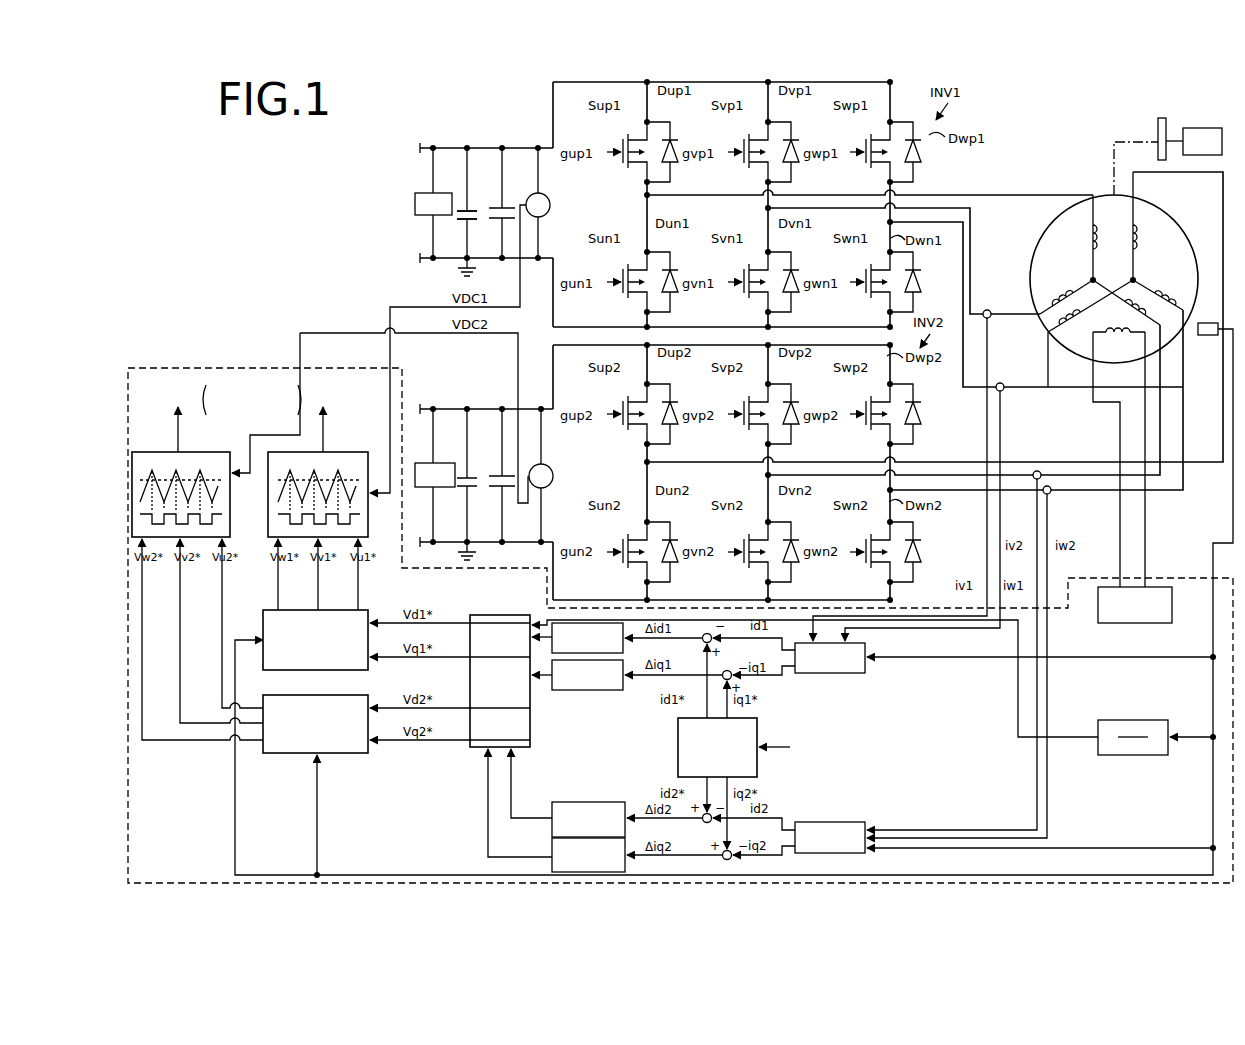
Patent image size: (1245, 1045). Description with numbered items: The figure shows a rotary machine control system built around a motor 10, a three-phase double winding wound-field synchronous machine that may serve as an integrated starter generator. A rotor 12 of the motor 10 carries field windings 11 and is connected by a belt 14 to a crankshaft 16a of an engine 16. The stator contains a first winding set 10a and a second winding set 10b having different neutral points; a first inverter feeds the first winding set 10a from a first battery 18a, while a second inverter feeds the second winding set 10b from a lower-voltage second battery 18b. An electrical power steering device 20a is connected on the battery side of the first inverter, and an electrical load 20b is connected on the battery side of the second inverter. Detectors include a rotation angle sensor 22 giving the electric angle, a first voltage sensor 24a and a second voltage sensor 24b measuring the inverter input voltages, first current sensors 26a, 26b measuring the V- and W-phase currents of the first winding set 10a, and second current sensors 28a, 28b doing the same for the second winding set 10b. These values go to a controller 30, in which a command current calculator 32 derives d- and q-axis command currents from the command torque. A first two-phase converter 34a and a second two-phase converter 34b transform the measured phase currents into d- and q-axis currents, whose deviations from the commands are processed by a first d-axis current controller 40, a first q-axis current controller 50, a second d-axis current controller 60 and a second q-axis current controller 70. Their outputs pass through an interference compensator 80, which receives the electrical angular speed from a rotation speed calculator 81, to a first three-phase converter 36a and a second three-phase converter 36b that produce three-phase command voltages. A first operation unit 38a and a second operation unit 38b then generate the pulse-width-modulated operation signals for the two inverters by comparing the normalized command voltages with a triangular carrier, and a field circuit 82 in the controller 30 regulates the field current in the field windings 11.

The motor 10 is at (1186, 210).
The first winding set 10a is at (1078, 280).
The second winding set 10b is at (1146, 280).
The field windings 11 is at (1119, 457).
The rotor 12 is at (1042, 236).
The belt 14 is at (1114, 138).
The engine 16 is at (1198, 128).
The crankshaft 16a is at (1160, 118).
The first battery 18a is at (472, 210).
The second battery 18b is at (472, 478).
The electrical power steering device 20a is at (448, 185).
The electrical load 20b is at (448, 455).
The rotation angle sensor 22 is at (1208, 323).
The first voltage sensor 24a is at (545, 194).
The second voltage sensor 24b is at (548, 465).
The first current sensor 26a is at (990, 309).
The first current sensor 26b is at (1000, 383).
The second current sensor 28a is at (1037, 472).
The second current sensor 28b is at (1051, 492).
The controller 30 is at (260, 366).
The command current calculator 32 is at (677, 748).
The first two-phase converter 34a is at (847, 673).
The second two-phase converter 34b is at (857, 822).
The first three-phase converter 36a is at (260, 618).
The second three-phase converter 36b is at (262, 698).
The first operation unit 38a is at (344, 450).
The second operation unit 38b is at (154, 450).
The first d-axis current controller 40 is at (625, 648).
The first q-axis current controller 50 is at (567, 691).
The second d-axis current controller 60 is at (570, 802).
The second q-axis current controller 70 is at (552, 850).
The interference compensator 80 is at (533, 737).
The rotation speed calculator 81 is at (1138, 756).
The field circuit 82 is at (1138, 625).